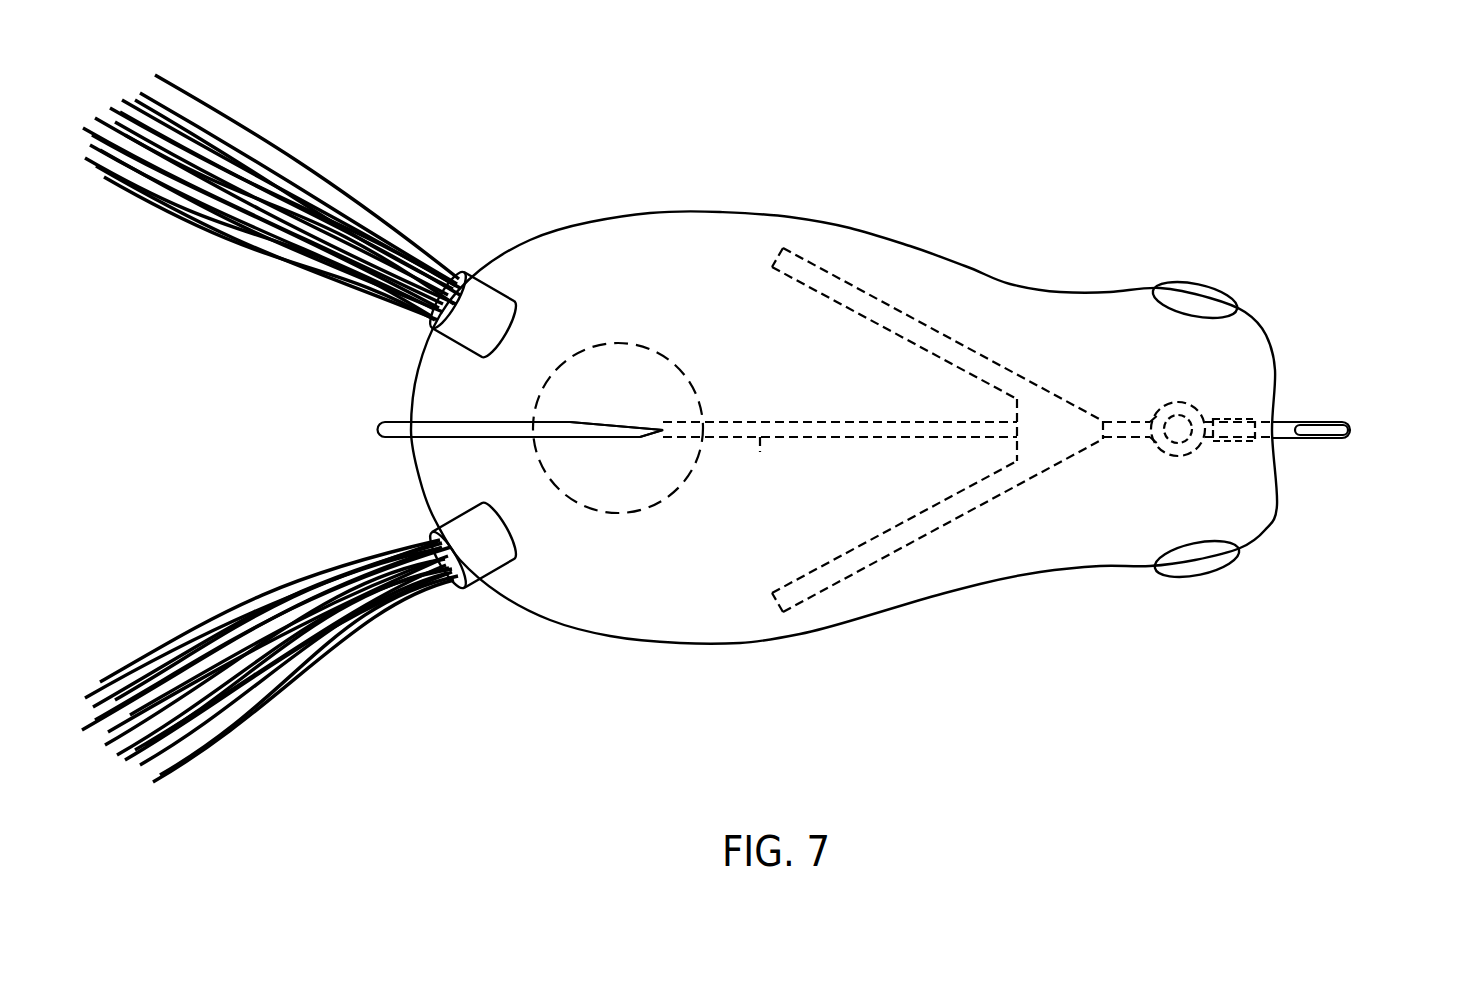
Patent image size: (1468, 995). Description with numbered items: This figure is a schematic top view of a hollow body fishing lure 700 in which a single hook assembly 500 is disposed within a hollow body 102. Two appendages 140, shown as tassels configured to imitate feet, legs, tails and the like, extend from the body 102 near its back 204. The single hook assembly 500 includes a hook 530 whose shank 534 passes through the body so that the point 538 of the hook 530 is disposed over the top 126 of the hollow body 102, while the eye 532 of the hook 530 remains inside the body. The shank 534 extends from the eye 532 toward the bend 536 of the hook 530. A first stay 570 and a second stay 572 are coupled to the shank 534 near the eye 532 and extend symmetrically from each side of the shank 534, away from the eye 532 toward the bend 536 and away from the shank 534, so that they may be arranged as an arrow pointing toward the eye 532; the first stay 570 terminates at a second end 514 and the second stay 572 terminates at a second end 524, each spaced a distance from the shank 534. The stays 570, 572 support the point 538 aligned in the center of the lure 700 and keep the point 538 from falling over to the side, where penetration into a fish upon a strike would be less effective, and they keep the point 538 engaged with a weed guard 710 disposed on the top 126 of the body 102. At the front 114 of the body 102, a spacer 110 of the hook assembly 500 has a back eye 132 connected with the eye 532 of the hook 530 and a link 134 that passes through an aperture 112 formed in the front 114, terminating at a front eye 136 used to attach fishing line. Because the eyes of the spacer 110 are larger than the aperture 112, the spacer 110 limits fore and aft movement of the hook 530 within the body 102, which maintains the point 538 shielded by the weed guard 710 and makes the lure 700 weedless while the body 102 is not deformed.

The hollow body fishing lure 700 is at (917, 102).
The hollow body 102 is at (995, 277).
The spacer 110 is at (1303, 450).
The aperture 112 is at (1273, 407).
The front 114 is at (1277, 497).
The top 126 is at (718, 266).
The back eye 132 is at (1213, 417).
The link 134 is at (1255, 442).
The front eye 136 is at (1328, 432).
The appendages 140 is at (246, 284).
The back 204 is at (415, 372).
The single hook assembly 500 is at (1363, 441).
The second end 514 is at (777, 600).
The second end 524 is at (777, 257).
The hook 530 is at (496, 414).
The eye 532 is at (447, 437).
The shank 534 is at (760, 452).
The bend 536 is at (375, 425).
The point 538 is at (668, 427).
The first stay 570 is at (875, 537).
The second stay 572 is at (847, 290).
The weed guard 710 is at (625, 345).